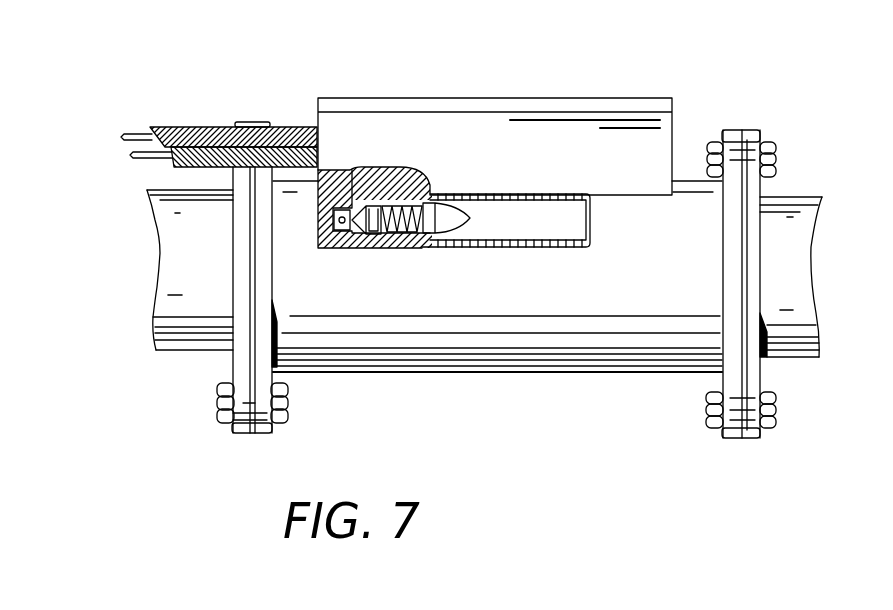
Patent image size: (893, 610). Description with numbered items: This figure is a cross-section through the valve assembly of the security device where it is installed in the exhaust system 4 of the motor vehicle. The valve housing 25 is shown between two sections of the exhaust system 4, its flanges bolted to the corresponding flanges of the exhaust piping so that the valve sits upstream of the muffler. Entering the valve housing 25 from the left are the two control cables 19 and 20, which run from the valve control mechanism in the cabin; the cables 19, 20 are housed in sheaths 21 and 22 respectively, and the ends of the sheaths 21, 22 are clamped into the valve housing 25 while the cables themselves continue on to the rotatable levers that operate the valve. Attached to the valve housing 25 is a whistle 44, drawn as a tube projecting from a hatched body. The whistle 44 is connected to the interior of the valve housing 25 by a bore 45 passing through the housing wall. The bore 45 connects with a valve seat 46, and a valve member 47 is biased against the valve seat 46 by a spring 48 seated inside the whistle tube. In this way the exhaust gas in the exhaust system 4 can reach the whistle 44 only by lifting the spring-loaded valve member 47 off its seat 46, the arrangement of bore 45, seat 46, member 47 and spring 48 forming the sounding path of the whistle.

The exhaust system 4 is at (484, 276).
The cable 19 is at (132, 133).
The cable 20 is at (130, 153).
The sheath 21 is at (175, 130).
The sheath 22 is at (212, 130).
The valve housing 25 is at (333, 100).
The whistle 44 is at (546, 247).
The bore 45 is at (349, 242).
The valve seat 46 is at (362, 216).
The valve member 47 is at (374, 212).
The spring 48 is at (412, 212).